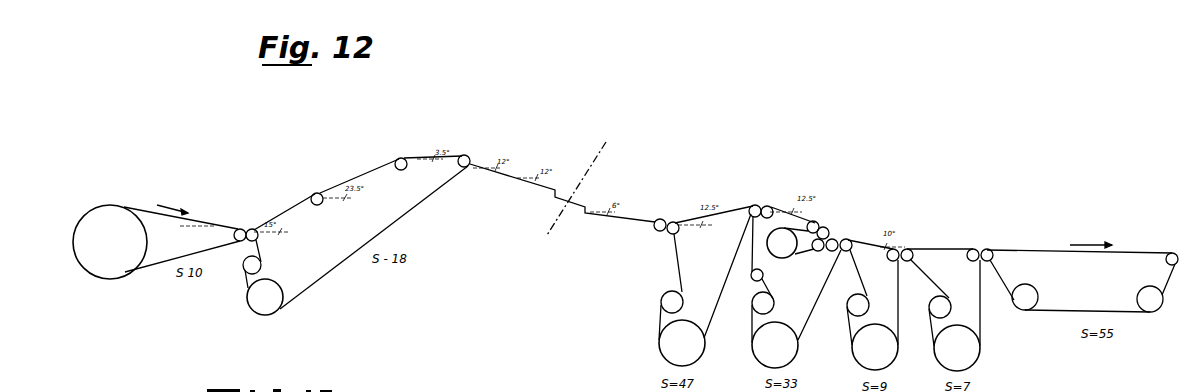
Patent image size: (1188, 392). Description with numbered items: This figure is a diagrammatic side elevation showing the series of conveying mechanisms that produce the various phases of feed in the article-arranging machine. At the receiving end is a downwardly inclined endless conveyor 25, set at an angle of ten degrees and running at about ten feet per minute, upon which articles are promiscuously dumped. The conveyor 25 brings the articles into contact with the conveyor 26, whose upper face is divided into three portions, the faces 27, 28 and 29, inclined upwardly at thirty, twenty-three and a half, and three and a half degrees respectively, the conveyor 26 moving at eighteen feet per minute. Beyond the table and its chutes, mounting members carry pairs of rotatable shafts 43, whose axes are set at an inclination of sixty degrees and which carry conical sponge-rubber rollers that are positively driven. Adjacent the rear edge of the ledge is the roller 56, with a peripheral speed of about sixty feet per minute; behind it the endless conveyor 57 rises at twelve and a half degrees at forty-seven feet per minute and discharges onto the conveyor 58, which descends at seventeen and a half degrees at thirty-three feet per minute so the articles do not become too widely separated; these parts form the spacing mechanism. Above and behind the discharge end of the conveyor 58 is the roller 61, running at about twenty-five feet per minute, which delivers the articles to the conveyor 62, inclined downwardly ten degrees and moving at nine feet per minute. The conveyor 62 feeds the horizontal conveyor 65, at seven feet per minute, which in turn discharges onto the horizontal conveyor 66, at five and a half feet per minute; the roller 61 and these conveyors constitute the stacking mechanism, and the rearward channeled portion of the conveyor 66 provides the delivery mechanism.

The endless conveyor 25 is at (152, 212).
The conveyor 26 is at (320, 281).
The face of conveyor 27 is at (305, 198).
The face of conveyor 28 is at (345, 182).
The face of conveyor 29 is at (417, 157).
The rotatable shaft 43 is at (603, 153).
The roller 56 is at (656, 191).
The endless conveyor 57 is at (753, 206).
The conveyor 58 is at (776, 208).
The roller 61 is at (826, 238).
The conveyor 62 is at (879, 242).
The conveyor 65 is at (945, 250).
The conveyor 66 is at (1132, 244).